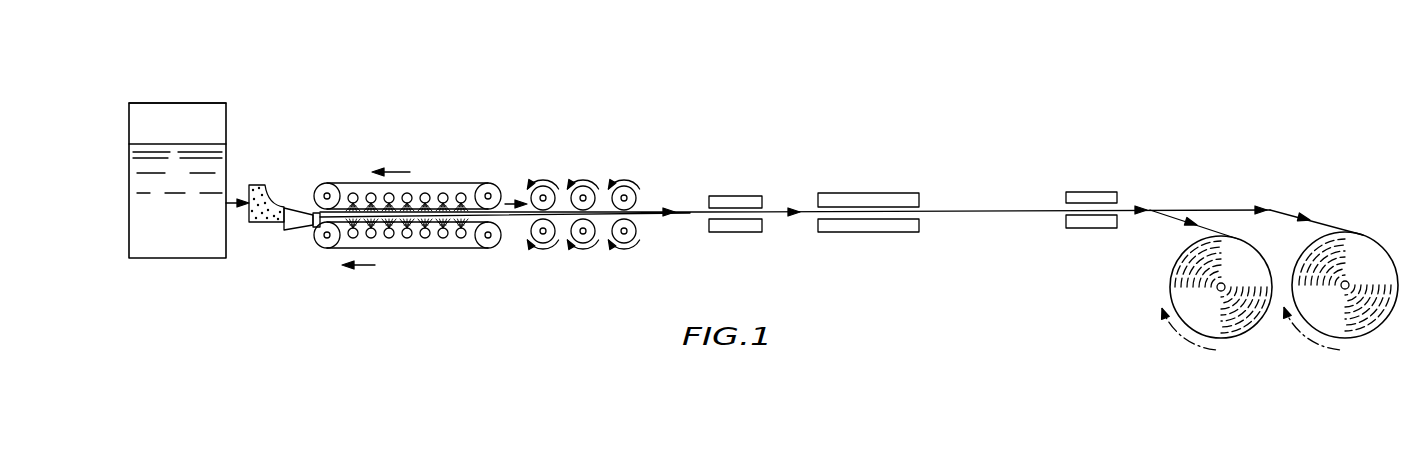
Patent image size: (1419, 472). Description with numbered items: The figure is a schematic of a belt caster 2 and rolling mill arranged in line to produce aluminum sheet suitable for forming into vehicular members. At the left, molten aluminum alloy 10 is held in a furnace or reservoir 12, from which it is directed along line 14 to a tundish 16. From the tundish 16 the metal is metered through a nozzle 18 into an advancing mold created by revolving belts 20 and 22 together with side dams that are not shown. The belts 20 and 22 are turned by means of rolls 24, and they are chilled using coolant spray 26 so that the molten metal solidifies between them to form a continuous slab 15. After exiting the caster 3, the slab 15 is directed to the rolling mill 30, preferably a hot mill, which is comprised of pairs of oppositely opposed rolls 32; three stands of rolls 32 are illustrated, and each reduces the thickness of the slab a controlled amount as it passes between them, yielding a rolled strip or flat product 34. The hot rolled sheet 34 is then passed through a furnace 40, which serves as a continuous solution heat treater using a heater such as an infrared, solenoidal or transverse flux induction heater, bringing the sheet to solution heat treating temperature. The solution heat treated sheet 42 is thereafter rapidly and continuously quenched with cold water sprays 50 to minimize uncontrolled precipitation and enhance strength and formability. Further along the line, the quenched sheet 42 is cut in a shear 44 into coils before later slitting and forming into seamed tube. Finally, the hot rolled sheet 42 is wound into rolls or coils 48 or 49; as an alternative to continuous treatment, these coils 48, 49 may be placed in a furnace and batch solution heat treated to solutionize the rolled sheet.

The belt caster 2 is at (245, 65).
The caster 3 is at (325, 132).
The molten aluminum alloy 10 is at (188, 235).
The furnace or reservoir 12 is at (166, 103).
The line 14 is at (237, 210).
The continuous slab 15 is at (512, 200).
The tundish 16 is at (256, 185).
The nozzle 18 is at (296, 207).
The revolving belt 20 is at (360, 183).
The revolving belt 22 is at (380, 249).
The rolls 24 is at (322, 184).
The coolant spray 26 is at (425, 193).
The rolling mill 30 is at (638, 162).
The oppositely opposed rolls 32 is at (548, 186).
The rolled strip or flat product 34 is at (644, 210).
The furnace 40 is at (745, 196).
The solution heat treated sheet 42 is at (777, 214).
The shear 44 is at (1082, 192).
The rolls or coils 48 is at (1175, 270).
The rolls or coils 49 is at (1305, 255).
The cold water sprays 50 is at (860, 193).